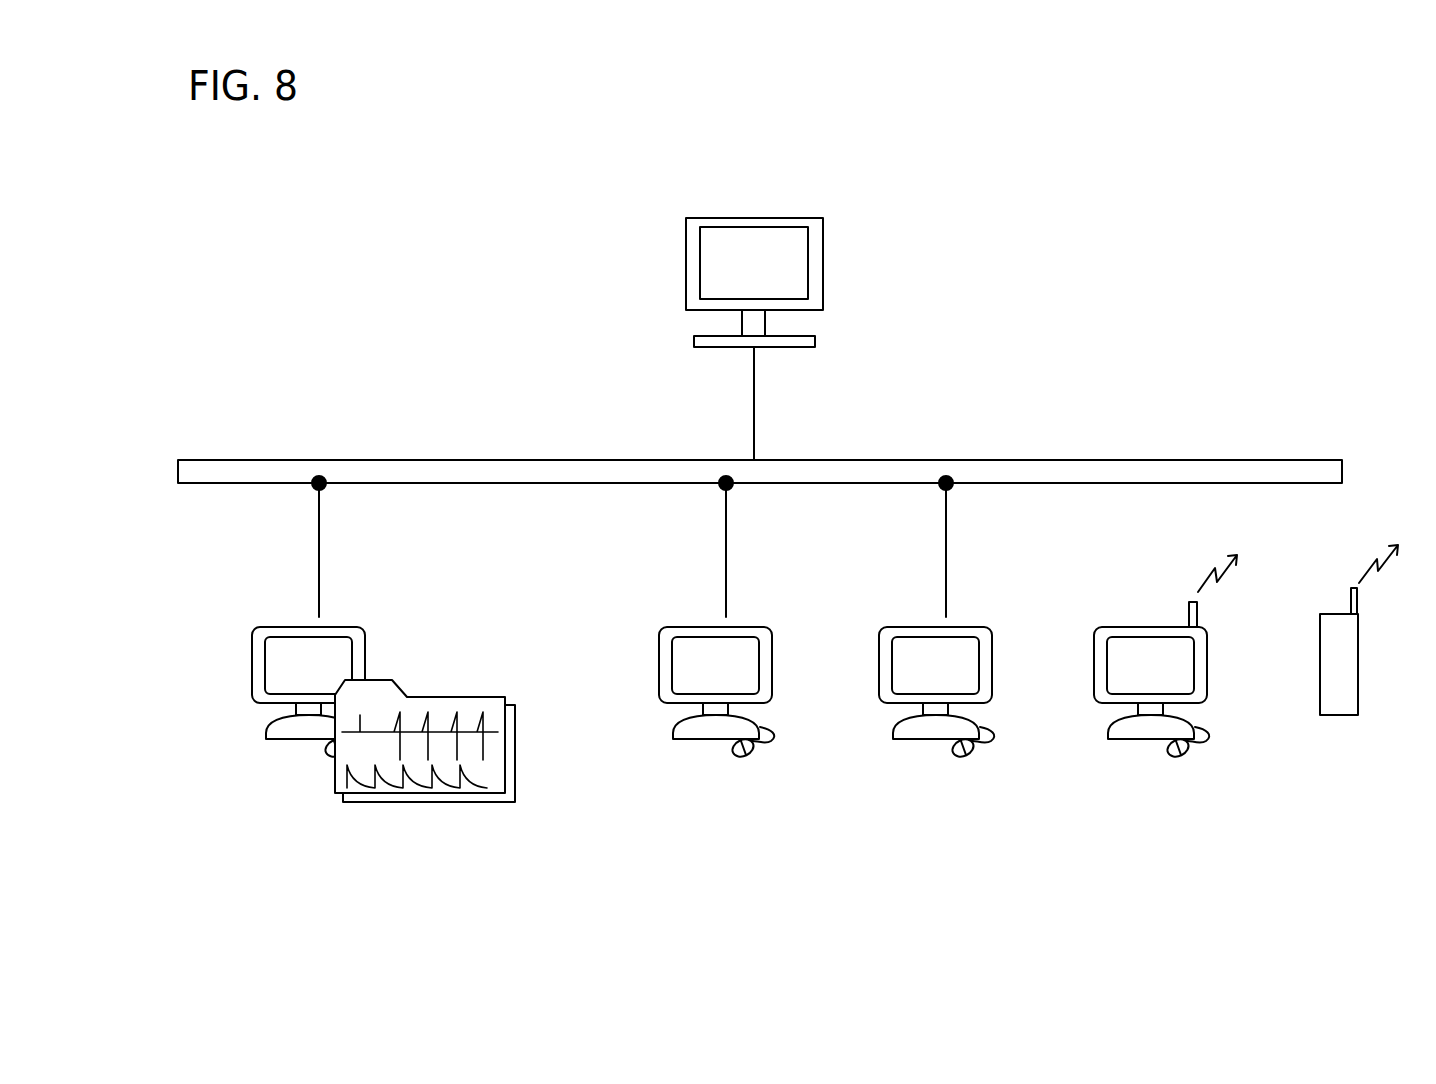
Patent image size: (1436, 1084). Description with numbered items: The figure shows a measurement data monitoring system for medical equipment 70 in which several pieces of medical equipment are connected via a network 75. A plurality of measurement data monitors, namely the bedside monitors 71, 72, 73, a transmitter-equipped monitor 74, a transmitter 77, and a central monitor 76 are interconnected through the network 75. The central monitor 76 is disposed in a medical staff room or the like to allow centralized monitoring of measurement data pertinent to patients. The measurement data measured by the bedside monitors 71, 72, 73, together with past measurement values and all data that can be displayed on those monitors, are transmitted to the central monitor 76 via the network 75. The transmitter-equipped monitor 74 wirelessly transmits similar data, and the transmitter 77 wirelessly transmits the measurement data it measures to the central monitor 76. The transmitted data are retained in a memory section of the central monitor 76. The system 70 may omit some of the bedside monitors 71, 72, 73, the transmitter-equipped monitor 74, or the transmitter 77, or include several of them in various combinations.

The measurement data monitoring system for medical equipment 70 is at (1064, 182).
The bedside monitor 71 is at (280, 675).
The bedside monitor 72 is at (683, 672).
The bedside monitor 73 is at (903, 672).
The transmitter-equipped monitor 74 is at (1118, 672).
The network 75 is at (513, 467).
The central monitor 76 is at (717, 243).
The transmitter 77 is at (1333, 688).